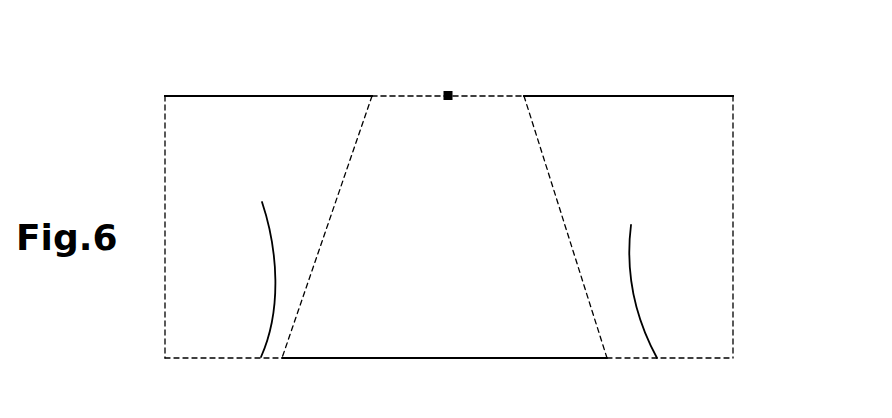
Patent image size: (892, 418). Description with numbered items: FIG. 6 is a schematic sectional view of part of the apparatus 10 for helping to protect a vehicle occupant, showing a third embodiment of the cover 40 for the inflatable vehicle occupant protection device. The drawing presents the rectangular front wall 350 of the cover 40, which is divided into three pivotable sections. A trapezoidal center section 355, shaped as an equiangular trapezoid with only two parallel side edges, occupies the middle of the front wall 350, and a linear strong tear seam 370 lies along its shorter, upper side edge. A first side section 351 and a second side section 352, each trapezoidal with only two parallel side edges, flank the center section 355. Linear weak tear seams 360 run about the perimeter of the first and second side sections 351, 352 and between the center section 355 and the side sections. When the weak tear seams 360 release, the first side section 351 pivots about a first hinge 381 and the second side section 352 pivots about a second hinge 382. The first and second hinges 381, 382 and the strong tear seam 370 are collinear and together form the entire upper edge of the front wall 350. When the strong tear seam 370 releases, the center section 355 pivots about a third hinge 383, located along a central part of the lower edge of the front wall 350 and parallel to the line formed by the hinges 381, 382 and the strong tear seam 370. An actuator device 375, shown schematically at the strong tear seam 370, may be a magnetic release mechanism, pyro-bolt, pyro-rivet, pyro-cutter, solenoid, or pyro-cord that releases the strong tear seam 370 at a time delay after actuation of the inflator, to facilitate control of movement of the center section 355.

The apparatus 10 is at (770, 72).
The cover 40 is at (792, 108).
The front wall 350 is at (135, 98).
The first side section 351 is at (206, 68).
The second side section 352 is at (661, 68).
The center section 355 is at (508, 58).
The weak tear seams 360 is at (323, 238).
The strong tear seam 370 is at (480, 95).
The actuator device 375 is at (448, 100).
The first hinge 381 is at (258, 95).
The second hinge 382 is at (578, 95).
The third hinge 383 is at (420, 358).